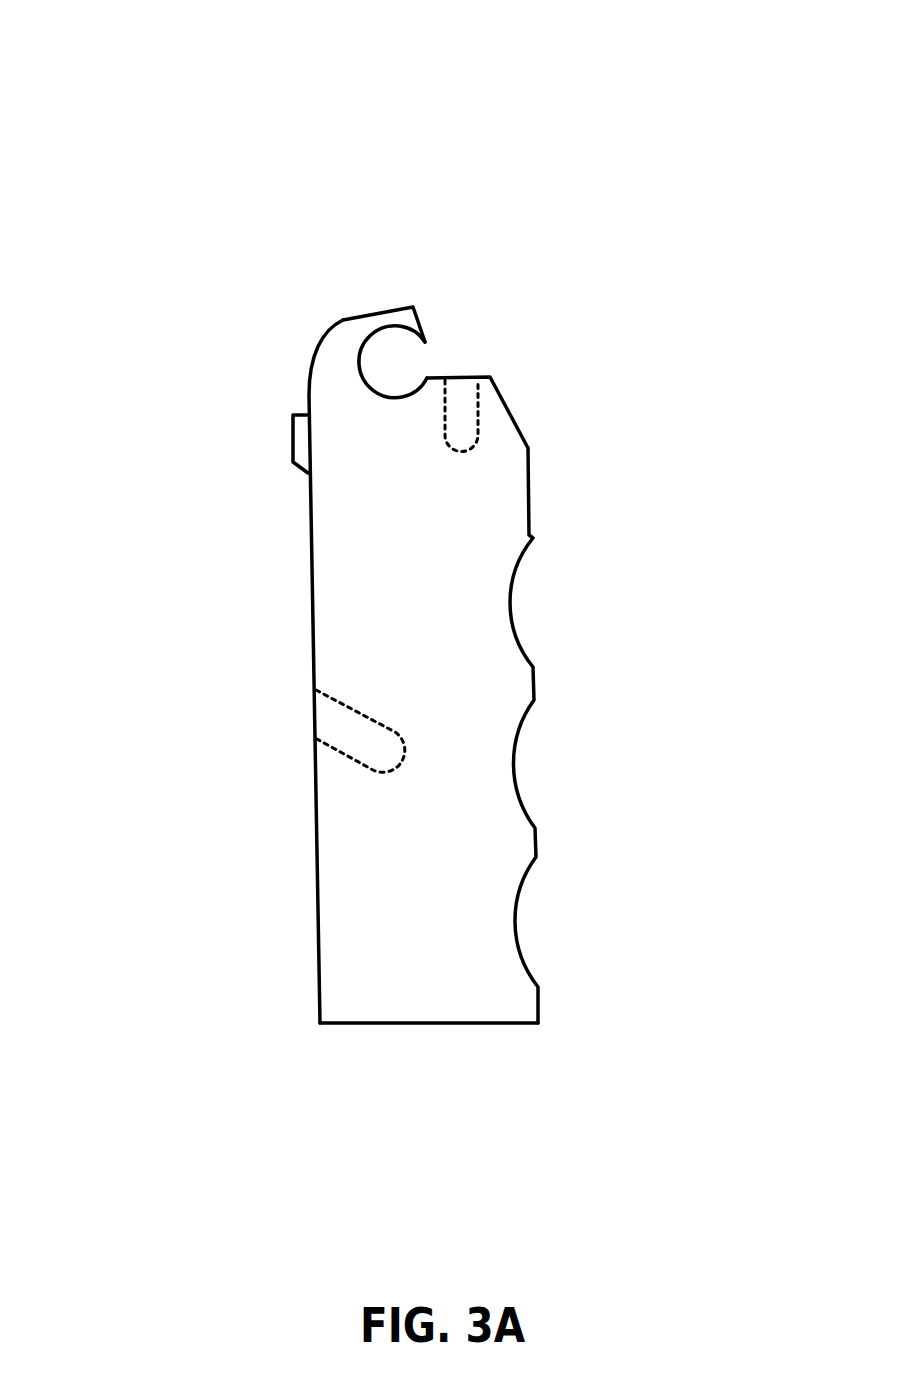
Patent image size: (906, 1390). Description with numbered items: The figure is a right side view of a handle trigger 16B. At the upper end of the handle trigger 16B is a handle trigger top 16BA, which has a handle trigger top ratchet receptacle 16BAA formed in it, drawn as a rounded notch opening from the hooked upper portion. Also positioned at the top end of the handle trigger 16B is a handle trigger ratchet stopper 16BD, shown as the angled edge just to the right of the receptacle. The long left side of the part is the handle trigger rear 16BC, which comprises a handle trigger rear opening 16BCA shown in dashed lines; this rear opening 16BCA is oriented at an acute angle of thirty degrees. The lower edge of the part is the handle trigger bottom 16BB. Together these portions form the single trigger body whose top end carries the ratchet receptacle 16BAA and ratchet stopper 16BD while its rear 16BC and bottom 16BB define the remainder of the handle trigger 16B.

The handle trigger 16B is at (405, 42).
The handle trigger top 16BA is at (343, 320).
The handle trigger top ratchet receptacle 16BAA is at (415, 367).
The handle trigger ratchet stopper 16BD is at (515, 415).
The handle trigger rear 16BC is at (322, 872).
The handle trigger rear opening 16BCA is at (330, 718).
The handle trigger bottom 16BB is at (407, 1023).